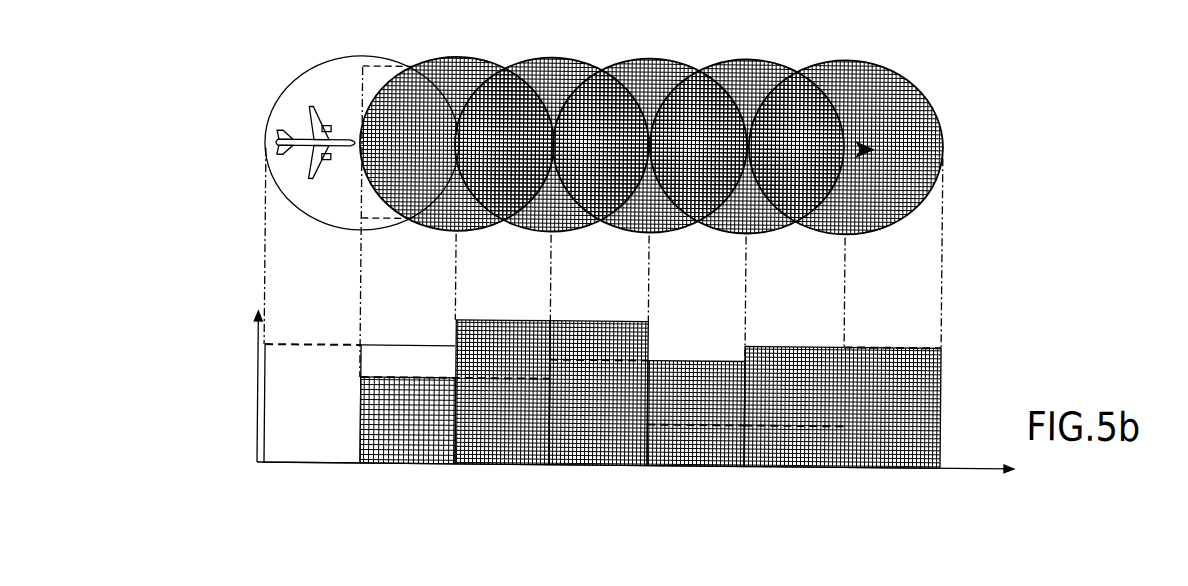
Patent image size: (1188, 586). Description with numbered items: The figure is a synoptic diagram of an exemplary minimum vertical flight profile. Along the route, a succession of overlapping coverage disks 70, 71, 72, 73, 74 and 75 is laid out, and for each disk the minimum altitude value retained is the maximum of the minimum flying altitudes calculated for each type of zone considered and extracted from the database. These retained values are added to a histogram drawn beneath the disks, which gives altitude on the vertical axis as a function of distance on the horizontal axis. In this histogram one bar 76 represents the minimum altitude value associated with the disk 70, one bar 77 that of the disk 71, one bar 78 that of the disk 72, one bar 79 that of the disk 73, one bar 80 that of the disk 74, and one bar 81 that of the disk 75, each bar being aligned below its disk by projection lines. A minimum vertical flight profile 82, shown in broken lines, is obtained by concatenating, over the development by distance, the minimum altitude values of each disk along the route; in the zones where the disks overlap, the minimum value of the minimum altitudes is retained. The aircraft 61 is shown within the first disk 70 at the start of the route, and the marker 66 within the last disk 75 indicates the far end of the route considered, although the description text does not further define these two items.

The aircraft 61 is at (285, 122).
The aircraft position marker 66 is at (887, 130).
The disk 70 is at (334, 47).
The disk 71 is at (447, 47).
The disk 72 is at (544, 47).
The disk 73 is at (645, 47).
The disk 74 is at (752, 47).
The disk 75 is at (850, 47).
The bar 76 is at (262, 446).
The bar 77 is at (358, 404).
The bar 78 is at (453, 446).
The bar 79 is at (547, 404).
The bar 80 is at (645, 404).
The bar 81 is at (742, 446).
The minimum vertical flight profile 82 is at (279, 336).